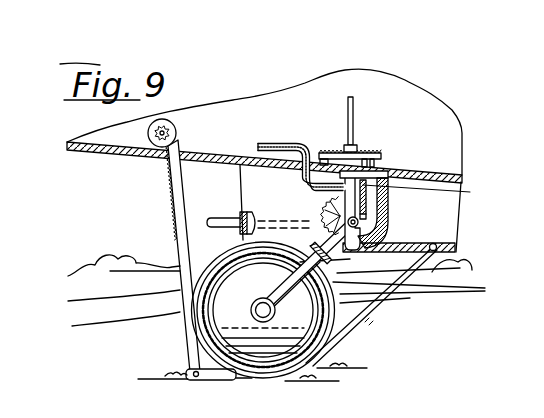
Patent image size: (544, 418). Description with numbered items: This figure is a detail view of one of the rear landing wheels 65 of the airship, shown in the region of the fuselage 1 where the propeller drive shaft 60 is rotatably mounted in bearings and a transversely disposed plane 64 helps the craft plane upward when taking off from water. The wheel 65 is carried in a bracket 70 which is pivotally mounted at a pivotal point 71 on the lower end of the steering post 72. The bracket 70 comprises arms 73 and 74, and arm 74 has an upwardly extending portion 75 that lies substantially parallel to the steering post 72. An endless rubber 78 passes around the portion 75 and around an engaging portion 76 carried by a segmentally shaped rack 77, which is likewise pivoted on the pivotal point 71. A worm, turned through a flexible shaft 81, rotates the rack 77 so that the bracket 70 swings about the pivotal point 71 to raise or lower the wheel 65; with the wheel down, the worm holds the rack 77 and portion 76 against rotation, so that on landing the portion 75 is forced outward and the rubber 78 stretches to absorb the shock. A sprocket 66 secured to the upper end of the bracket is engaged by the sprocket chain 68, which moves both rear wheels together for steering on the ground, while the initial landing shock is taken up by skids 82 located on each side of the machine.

The vehicle body 1 is at (454, 127).
The propeller drive shaft 60 is at (225, 223).
The transversely disposed plane 64 is at (353, 108).
The rear landing wheel 65 is at (292, 363).
The sprocket 66 is at (372, 150).
The sprocket chain 68 is at (326, 150).
The bracket 70 is at (300, 292).
The pivotal point 71 is at (389, 229).
The steering post 72 is at (340, 184).
The arm 73 is at (264, 297).
The arm 74 is at (335, 270).
The upwardly extending portion 75 is at (366, 203).
The engaging portion 76 is at (382, 168).
The segmentally shaped rack 77 is at (330, 210).
The endless rubber 78 is at (429, 195).
The flexible shaft 81 is at (280, 147).
The skid 82 is at (372, 320).